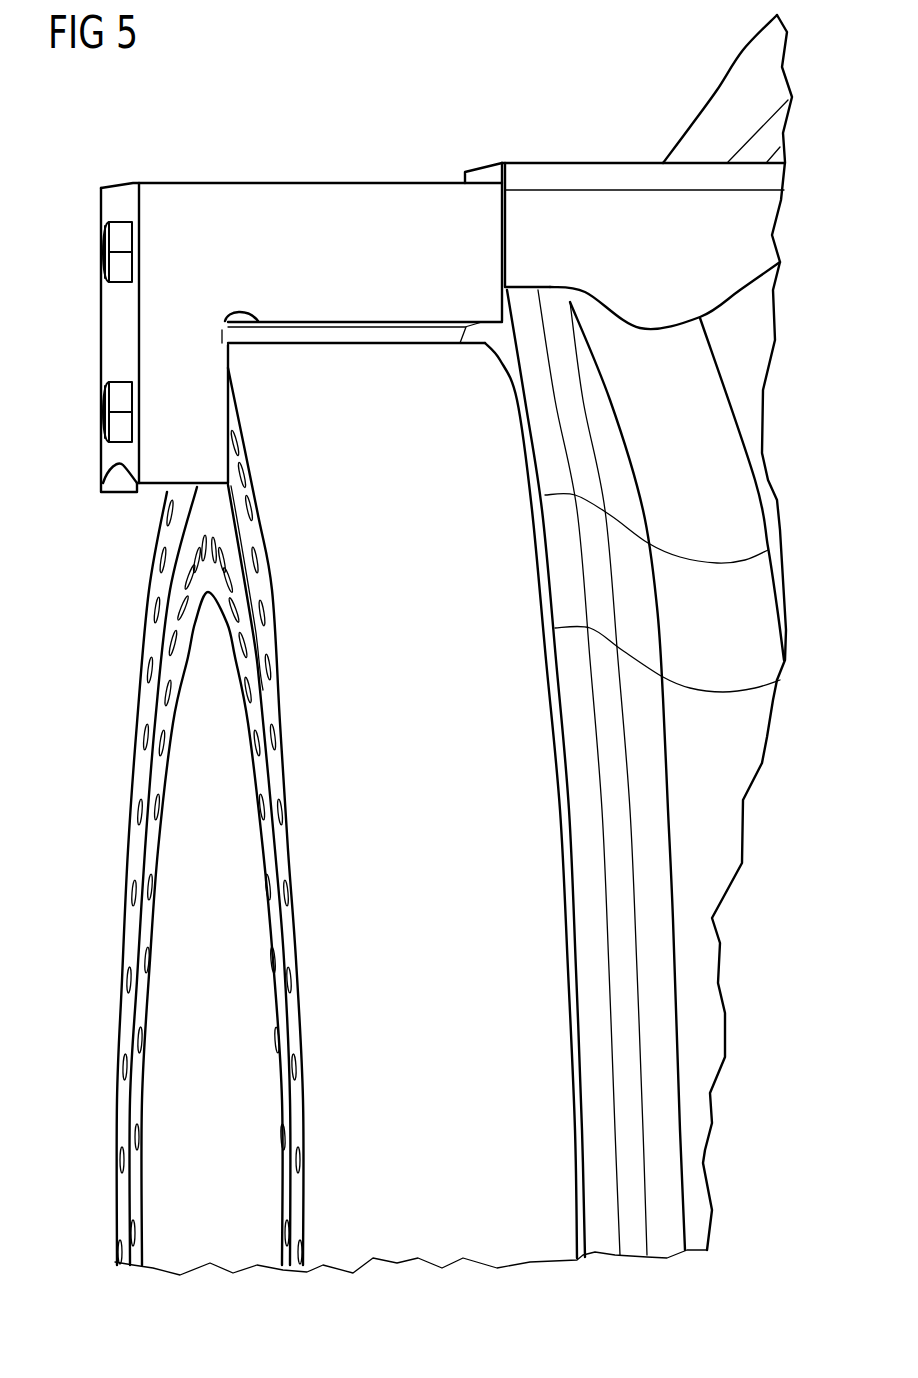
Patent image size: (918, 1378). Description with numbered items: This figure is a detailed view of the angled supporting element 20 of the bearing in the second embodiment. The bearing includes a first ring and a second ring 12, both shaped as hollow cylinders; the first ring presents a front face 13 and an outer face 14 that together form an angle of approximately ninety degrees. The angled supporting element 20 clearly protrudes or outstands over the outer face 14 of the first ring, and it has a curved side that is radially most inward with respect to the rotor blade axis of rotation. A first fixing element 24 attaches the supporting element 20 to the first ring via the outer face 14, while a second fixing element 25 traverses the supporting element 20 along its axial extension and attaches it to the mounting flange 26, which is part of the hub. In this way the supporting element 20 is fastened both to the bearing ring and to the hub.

The second ring 12 is at (275, 1000).
The front face 13 is at (290, 1102).
The outer face 14 is at (450, 1205).
The angled supporting element 20 is at (316, 197).
The first fixing element 24 is at (121, 398).
The second fixing element 25 is at (121, 268).
The mounting flange 26 is at (598, 203).